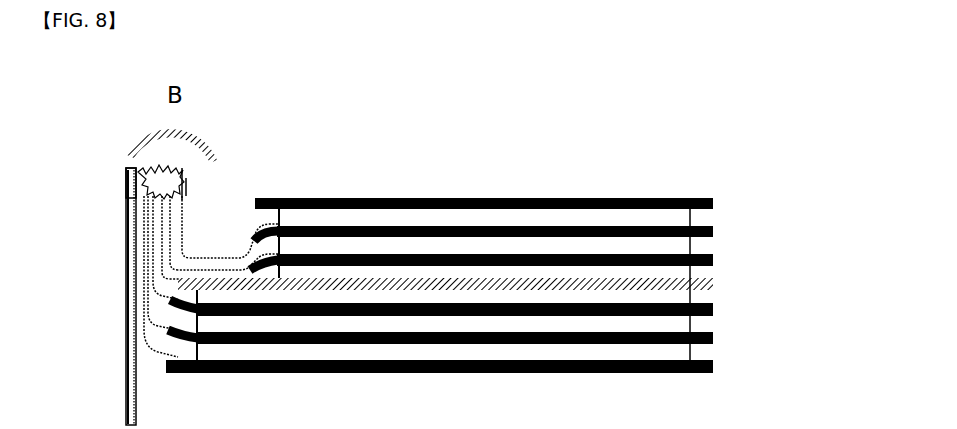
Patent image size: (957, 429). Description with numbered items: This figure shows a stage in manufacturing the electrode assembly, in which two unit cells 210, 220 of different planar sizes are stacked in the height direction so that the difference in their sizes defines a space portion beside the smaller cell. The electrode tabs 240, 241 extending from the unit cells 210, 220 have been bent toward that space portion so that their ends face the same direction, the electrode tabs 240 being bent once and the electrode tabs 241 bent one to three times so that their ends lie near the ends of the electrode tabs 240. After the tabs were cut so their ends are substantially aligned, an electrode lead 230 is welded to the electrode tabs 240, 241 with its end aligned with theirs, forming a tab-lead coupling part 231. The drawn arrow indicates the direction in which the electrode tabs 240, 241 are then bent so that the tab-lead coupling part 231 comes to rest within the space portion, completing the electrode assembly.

The unit cell 210 is at (760, 323).
The unit cell 220 is at (755, 250).
The electrode lead 230 is at (130, 387).
The tab-lead coupling part 231 is at (126, 172).
The electrode tabs 240 is at (193, 218).
The electrode tabs 241 is at (273, 248).